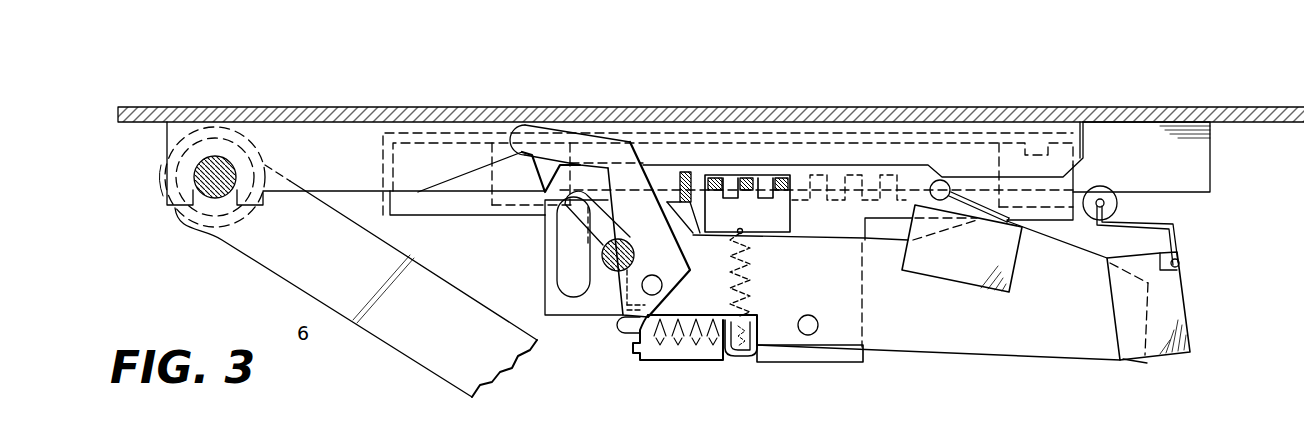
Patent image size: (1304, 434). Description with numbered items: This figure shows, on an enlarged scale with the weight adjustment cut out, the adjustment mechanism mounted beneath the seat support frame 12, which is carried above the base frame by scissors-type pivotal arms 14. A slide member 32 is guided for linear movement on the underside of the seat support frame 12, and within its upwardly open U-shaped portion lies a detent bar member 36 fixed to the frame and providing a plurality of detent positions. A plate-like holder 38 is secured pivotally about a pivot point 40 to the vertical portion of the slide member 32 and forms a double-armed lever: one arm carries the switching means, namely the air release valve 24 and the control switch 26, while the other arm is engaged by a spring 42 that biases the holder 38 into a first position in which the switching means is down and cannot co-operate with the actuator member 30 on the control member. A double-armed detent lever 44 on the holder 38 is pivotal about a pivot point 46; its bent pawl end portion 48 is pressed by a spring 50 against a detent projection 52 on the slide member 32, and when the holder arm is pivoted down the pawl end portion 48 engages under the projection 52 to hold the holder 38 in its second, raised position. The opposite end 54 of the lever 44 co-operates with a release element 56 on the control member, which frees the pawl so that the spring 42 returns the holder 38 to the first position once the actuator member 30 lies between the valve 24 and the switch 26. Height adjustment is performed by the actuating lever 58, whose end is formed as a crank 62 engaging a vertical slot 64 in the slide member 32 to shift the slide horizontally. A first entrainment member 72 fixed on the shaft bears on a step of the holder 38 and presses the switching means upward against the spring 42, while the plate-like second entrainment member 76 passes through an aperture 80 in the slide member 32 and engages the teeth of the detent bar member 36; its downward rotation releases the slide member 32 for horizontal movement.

The seat support frame 12 is at (318, 108).
The pivotal arms 14 is at (332, 288).
The air release valve 24 is at (1172, 286).
The control switch 26 is at (957, 268).
The actuator member 30 is at (1017, 162).
The slide member 32 is at (683, 353).
The detent bar member 36 is at (773, 177).
The holder 38 is at (1032, 347).
The pivot point 40 is at (817, 327).
The spring 42 is at (753, 265).
The detent lever 44 is at (615, 152).
The pivot point 46 is at (652, 275).
The pawl end portion 48 is at (633, 338).
The spring 50 is at (700, 350).
The detent projection 52 is at (650, 357).
The end of the lever 54 is at (518, 127).
The release element 56 is at (463, 185).
The actuating lever 58 is at (613, 272).
The crank 62 is at (570, 213).
The vertical slot 64 is at (562, 278).
The first entrainment member 72 is at (684, 170).
The second entrainment member 76 is at (753, 195).
The aperture 80 is at (718, 176).